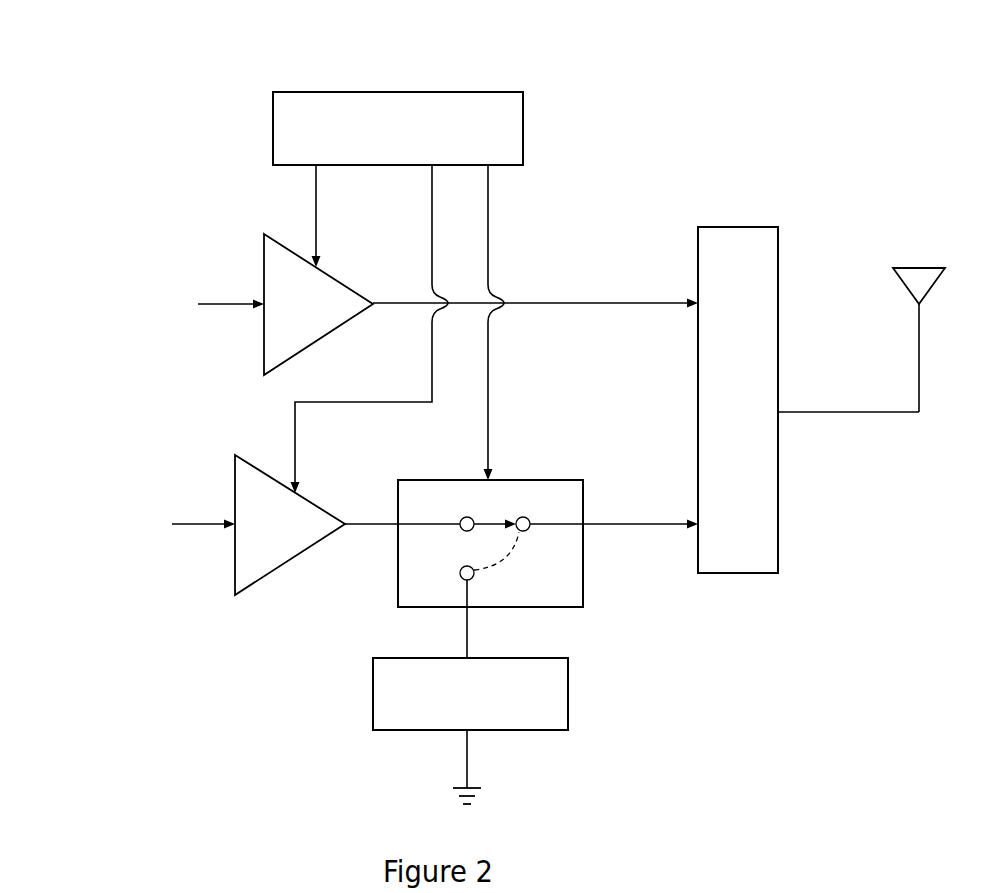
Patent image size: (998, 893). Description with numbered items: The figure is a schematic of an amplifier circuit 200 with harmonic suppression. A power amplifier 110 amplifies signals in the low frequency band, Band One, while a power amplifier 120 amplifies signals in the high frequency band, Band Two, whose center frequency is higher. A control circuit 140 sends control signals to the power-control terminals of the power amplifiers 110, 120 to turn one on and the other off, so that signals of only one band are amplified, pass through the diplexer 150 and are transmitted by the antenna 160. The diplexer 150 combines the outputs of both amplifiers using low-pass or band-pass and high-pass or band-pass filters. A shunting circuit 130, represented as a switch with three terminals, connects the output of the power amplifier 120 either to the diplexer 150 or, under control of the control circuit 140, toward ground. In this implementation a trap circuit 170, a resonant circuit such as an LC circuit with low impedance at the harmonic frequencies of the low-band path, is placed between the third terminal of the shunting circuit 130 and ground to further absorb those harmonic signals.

The amplifier circuit 200 is at (804, 103).
The control circuit 140 is at (455, 105).
The power amplifier 110 is at (324, 296).
The power amplifier 120 is at (300, 510).
The shunting circuit 130 is at (550, 473).
The diplexer 150 is at (764, 293).
The antenna 160 is at (934, 245).
The trap circuit 170 is at (553, 683).